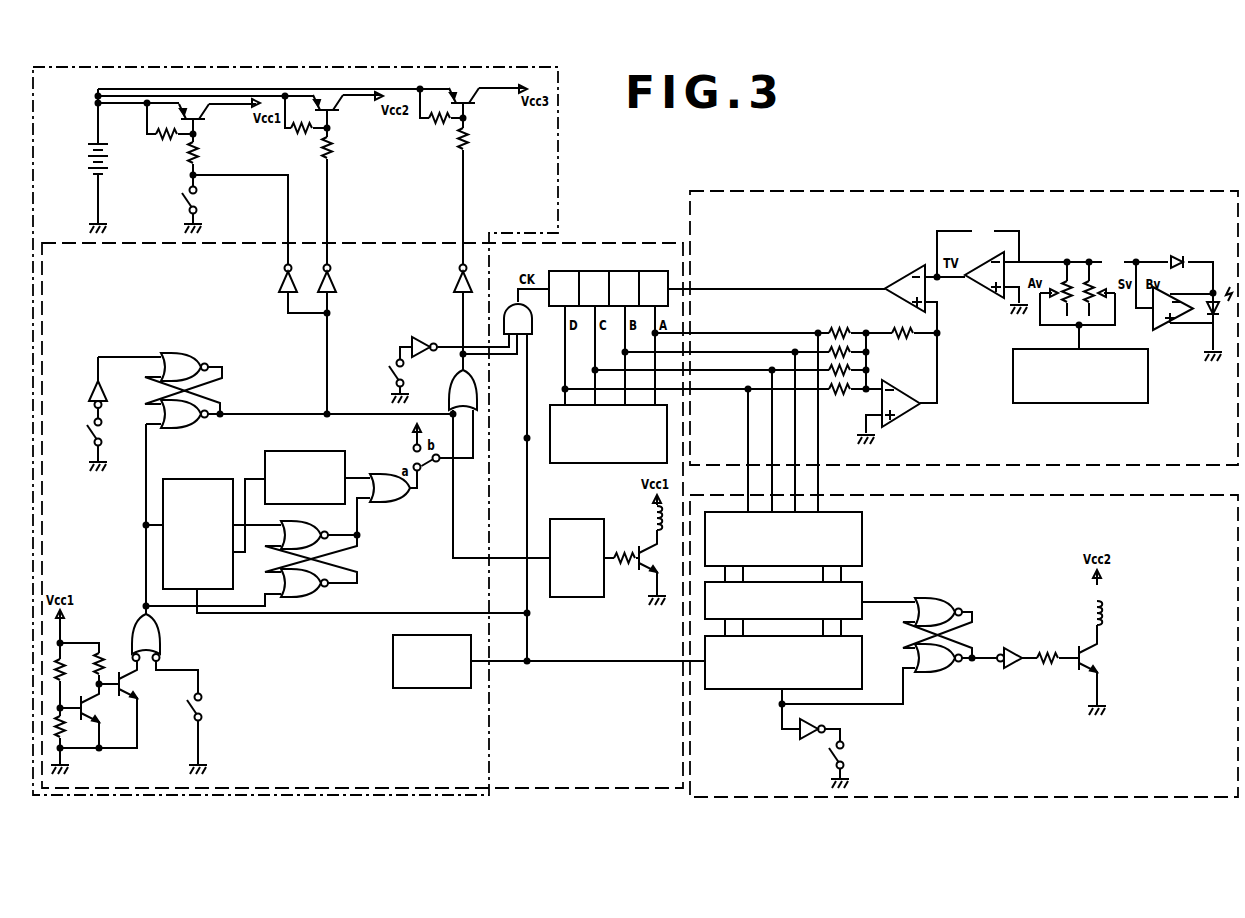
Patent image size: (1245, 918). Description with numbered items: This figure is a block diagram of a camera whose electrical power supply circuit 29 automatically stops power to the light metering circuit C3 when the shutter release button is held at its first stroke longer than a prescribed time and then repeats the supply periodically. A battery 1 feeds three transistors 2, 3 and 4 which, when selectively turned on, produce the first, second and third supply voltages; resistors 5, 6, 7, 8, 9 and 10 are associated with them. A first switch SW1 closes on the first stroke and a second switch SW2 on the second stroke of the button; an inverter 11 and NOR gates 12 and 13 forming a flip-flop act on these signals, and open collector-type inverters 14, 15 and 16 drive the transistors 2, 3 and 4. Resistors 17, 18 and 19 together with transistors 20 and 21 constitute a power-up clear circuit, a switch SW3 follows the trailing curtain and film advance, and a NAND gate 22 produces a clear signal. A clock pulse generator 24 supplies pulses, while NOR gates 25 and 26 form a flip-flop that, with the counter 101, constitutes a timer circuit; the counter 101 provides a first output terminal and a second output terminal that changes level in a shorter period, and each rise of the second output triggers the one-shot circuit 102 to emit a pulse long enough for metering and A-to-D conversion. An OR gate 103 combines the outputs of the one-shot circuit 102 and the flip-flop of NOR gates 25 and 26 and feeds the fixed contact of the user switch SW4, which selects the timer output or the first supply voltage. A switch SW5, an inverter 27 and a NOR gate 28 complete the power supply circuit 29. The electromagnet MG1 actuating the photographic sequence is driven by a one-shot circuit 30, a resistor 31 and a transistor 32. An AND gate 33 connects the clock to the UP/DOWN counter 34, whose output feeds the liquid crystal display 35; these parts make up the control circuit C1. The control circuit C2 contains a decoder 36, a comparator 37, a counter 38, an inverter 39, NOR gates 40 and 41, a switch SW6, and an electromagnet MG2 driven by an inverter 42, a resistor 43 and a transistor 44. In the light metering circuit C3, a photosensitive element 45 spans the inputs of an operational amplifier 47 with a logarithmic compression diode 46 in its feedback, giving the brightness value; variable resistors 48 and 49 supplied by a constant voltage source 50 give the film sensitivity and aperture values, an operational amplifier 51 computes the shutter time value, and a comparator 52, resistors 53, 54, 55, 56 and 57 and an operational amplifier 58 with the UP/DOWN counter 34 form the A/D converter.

The battery 1 is at (88, 158).
The transistor 2 is at (204, 119).
The transistor 3 is at (339, 110).
The transistor 4 is at (475, 103).
The resistor 5 is at (167, 140).
The resistor 6 is at (199, 153).
The resistor 7 is at (302, 136).
The resistor 8 is at (334, 148).
The resistor 9 is at (440, 126).
The resistor 10 is at (470, 140).
The inverter 11 is at (91, 387).
The NOR gate 12 is at (195, 353).
The NOR gate 13 is at (178, 429).
The open collector-type inverter 14 is at (279, 283).
The open collector-type inverter 15 is at (336, 283).
The open collector-type inverter 16 is at (454, 283).
The resistor 17 is at (66, 671).
The resistor 18 is at (66, 728).
The resistor 19 is at (106, 663).
The transistor 20 is at (96, 711).
The transistor 21 is at (138, 684).
The NAND gate 22 is at (160, 637).
The clock pulse generator 24 is at (416, 689).
The NOR gate 25 is at (327, 533).
The NOR gate 26 is at (326, 587).
The inverter 27 is at (422, 337).
The NOR gate 28 is at (449, 389).
The electrical power supply circuit 29 is at (561, 112).
The one-shot circuit 30 is at (578, 598).
The resistor 31 is at (626, 566).
The transistor 32 is at (651, 559).
The AND gate 33 is at (506, 311).
The UP/DOWN counter 34 is at (637, 271).
The liquid crystal display 35 is at (583, 464).
The decoder 36 is at (862, 529).
The comparator 37 is at (862, 591).
The counter 38 is at (862, 646).
The inverter 39 is at (807, 742).
The NOR gate 40 is at (938, 600).
The NOR gate 41 is at (935, 675).
The inverter 42 is at (1013, 670).
The resistor 43 is at (1050, 666).
The transistor 44 is at (1092, 659).
The photosensitive element 45 is at (1219, 320).
The logarithmic compression diode 46 is at (1177, 255).
The operational amplifier 47 is at (1170, 331).
The variable resistor 48 is at (1095, 311).
The variable resistor 49 is at (1060, 311).
The constant voltage source 50 is at (1045, 404).
The operational amplifier 51 is at (988, 297).
The comparator 52 is at (890, 283).
The resistor 53 is at (840, 328).
The resistor 54 is at (852, 348).
The resistor 55 is at (852, 367).
The resistor 56 is at (840, 396).
The resistor 57 is at (897, 329).
The operational amplifier 58 is at (906, 419).
The counter 101 is at (217, 479).
The one-shot circuit 102 is at (310, 451).
The OR gate 103 is at (387, 503).
The first switch SW1 is at (185, 197).
The second switch SW2 is at (88, 436).
The switch SW3 is at (207, 701).
The switch SW4 is at (433, 470).
The switch SW5 is at (389, 371).
The switch SW6 is at (846, 746).
The electromagnet MG1 is at (655, 518).
The electromagnet MG2 is at (1104, 610).
The control circuit C1 is at (640, 243).
The control circuit C2 is at (1195, 495).
The light metering circuit C3 is at (735, 191).